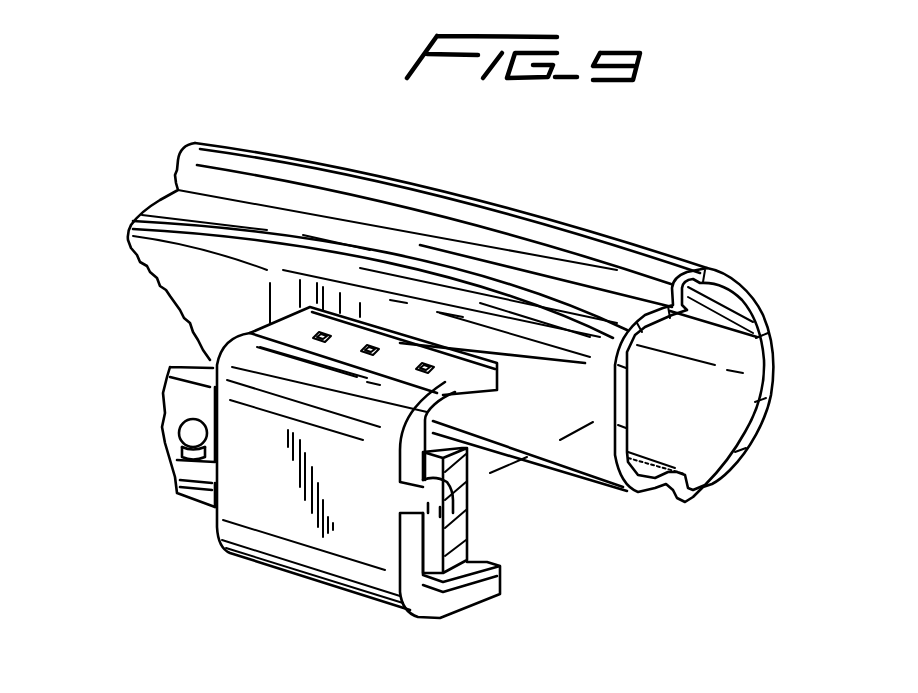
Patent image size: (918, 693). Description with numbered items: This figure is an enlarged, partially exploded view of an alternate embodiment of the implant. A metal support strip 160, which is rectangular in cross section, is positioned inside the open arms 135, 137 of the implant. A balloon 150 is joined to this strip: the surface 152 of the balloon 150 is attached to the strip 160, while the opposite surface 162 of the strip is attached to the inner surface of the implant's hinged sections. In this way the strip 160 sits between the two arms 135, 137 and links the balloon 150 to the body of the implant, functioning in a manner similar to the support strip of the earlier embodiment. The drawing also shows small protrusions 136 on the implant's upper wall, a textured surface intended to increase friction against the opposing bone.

The open arm 135 is at (463, 382).
The bosses 136 is at (374, 345).
The open arm 137 is at (467, 603).
The balloon 150 is at (637, 278).
The surface of the balloon 152 is at (575, 442).
The metal support strip 160 is at (460, 537).
The opposite surface of the strip 162 is at (183, 397).